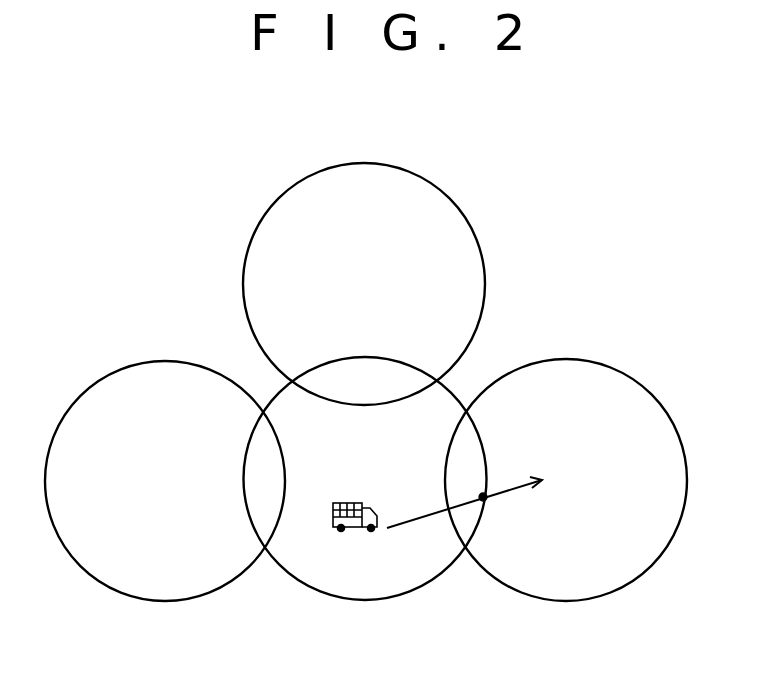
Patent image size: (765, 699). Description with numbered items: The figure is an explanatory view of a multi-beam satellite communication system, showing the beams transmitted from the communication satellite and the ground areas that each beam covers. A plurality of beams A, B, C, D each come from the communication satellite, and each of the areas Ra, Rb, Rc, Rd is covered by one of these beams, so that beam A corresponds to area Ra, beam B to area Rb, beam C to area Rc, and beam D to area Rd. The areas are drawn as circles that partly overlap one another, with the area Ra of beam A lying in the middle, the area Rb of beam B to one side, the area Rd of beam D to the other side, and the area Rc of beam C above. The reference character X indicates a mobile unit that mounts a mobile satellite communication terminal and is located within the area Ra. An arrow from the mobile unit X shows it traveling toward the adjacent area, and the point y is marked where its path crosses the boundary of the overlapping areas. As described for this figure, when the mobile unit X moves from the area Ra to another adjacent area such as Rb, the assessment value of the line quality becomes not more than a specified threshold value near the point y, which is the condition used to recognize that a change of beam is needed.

The area covered by beam A Ra is at (365, 511).
The area covered by beam B Rb is at (165, 463).
The area covered by beam C Rc is at (364, 268).
The area covered by beam D Rd is at (566, 463).
The beam A is at (365, 478).
The beam B is at (165, 481).
The beam C is at (364, 284).
The beam D is at (566, 480).
The mobile unit X is at (332, 532).
The point y is at (483, 497).